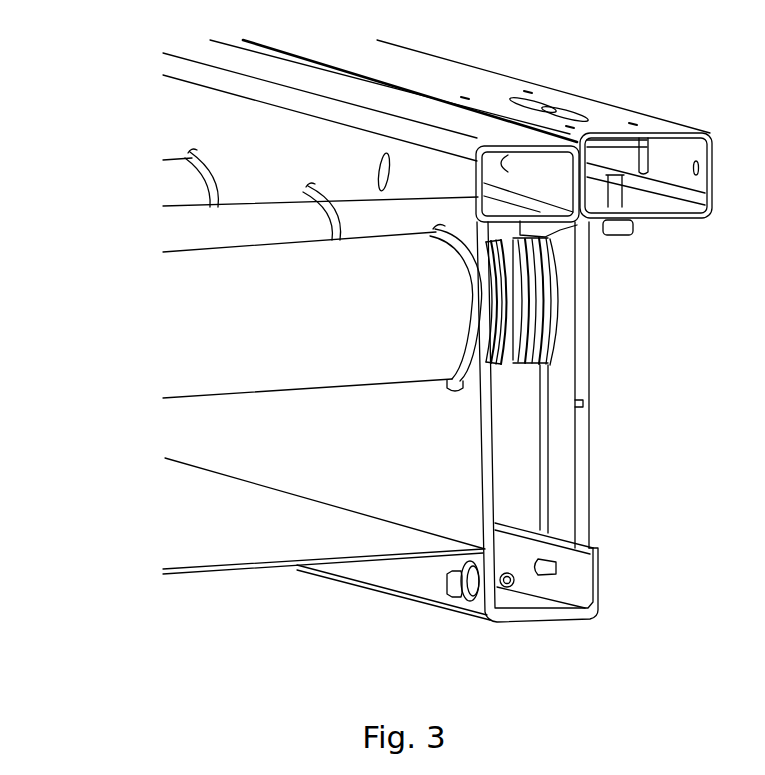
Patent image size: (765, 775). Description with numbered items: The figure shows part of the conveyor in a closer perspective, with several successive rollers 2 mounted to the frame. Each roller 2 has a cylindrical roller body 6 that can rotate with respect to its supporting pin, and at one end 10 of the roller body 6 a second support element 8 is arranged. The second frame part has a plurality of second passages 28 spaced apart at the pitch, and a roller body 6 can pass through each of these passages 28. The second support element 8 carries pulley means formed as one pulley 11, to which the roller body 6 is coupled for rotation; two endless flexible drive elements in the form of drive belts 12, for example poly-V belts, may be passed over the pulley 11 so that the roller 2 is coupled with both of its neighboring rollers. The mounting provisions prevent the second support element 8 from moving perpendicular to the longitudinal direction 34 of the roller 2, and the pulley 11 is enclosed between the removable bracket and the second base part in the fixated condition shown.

The roller 2 is at (133, 158).
The cylindrical roller body 6 is at (173, 170).
The second support element 8 is at (575, 262).
The end of the roller body 10 is at (438, 397).
The pulley 11 is at (533, 355).
The drive belt 12 is at (515, 300).
The second passage 28 is at (212, 163).
The longitudinal direction of the roller 34 is at (223, 427).